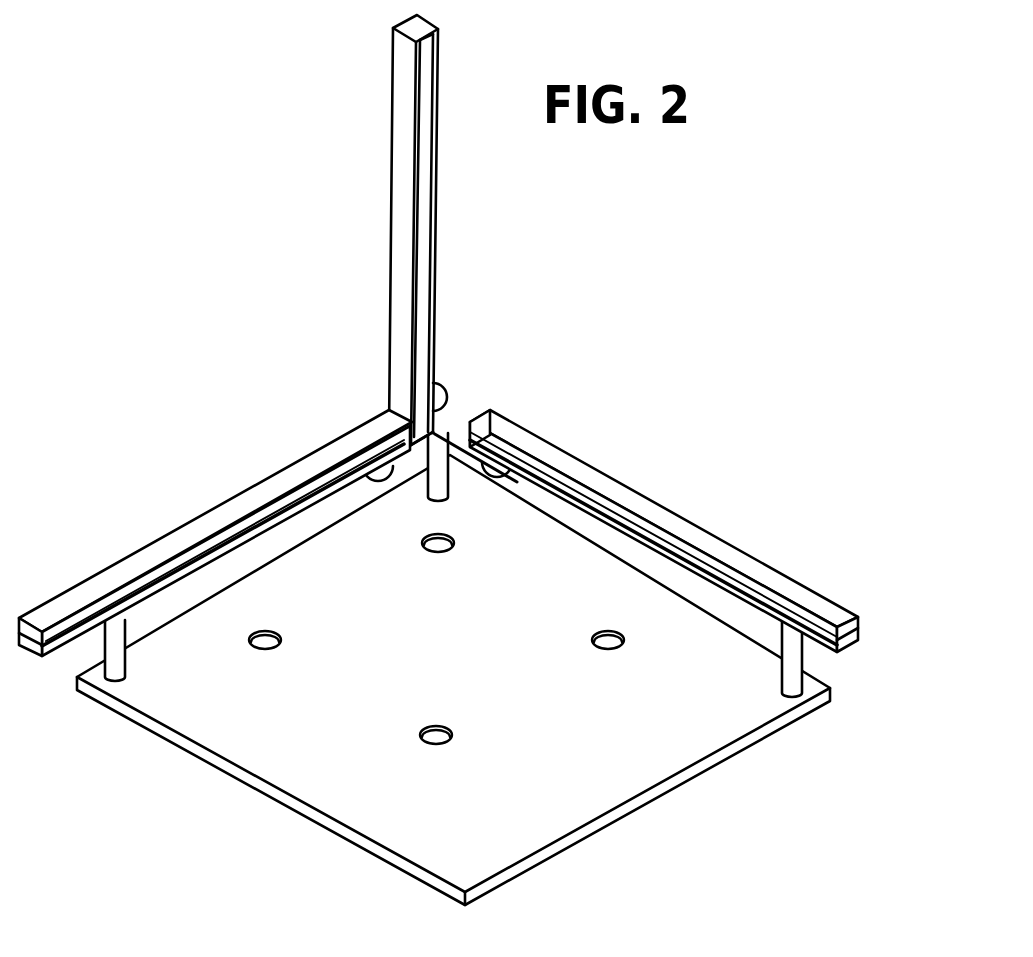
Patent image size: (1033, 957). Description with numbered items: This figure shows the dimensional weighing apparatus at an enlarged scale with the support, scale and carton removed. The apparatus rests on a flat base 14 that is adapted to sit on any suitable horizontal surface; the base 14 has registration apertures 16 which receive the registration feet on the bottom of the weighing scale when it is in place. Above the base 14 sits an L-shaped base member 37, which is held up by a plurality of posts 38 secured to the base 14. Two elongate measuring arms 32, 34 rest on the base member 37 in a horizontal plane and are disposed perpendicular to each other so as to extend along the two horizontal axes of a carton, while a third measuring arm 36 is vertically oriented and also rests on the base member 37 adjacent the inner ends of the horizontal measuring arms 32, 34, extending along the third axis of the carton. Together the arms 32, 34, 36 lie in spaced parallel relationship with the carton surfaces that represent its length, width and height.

The base 14 is at (672, 758).
The registration apertures 16 is at (452, 742).
The measuring arm 32 is at (702, 531).
The measuring arm 34 is at (228, 504).
The measuring arm 36 is at (433, 210).
The base member 37 is at (447, 420).
The posts 38 is at (123, 630).